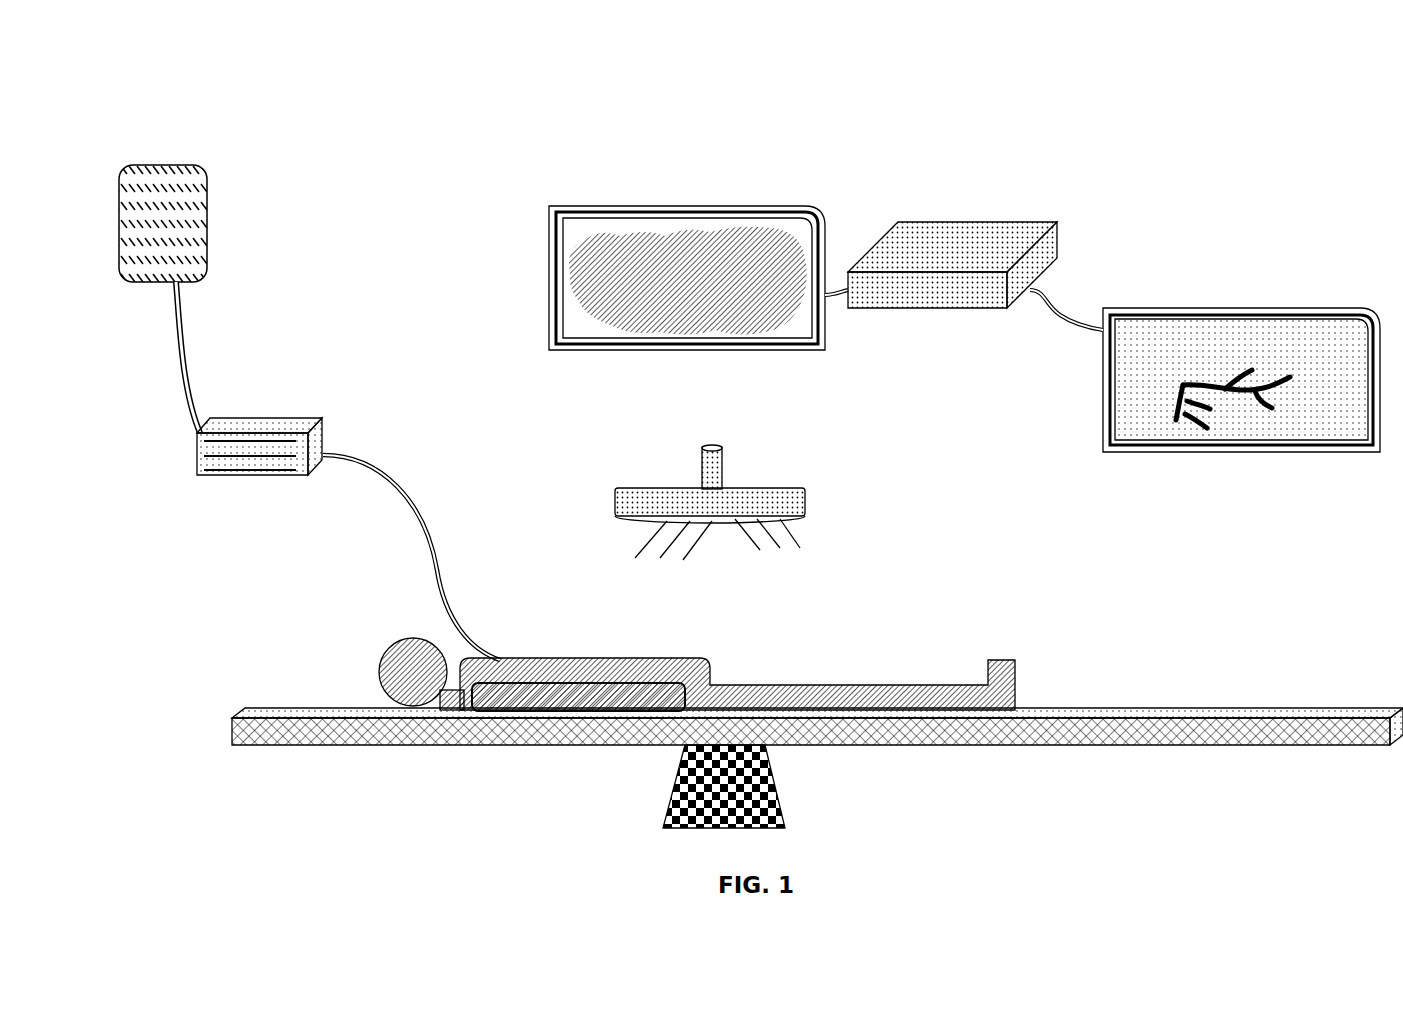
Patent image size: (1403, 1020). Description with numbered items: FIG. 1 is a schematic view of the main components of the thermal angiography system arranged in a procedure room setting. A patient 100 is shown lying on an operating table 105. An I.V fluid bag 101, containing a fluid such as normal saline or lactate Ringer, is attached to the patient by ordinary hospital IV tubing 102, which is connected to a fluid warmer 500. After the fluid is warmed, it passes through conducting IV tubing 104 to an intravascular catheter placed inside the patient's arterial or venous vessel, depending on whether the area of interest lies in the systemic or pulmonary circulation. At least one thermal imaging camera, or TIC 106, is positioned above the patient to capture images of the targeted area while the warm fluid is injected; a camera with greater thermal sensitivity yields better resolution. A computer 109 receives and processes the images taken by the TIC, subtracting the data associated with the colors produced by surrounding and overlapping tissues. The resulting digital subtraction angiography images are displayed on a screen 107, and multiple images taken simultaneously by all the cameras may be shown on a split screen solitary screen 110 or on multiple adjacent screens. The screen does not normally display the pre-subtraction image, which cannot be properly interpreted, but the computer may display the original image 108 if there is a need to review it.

The patient 100 is at (476, 686).
The I.V fluid bag 101 is at (172, 165).
The IV tubing 102 is at (180, 320).
The conducting IV tubing 104 is at (393, 488).
The operating table 105 is at (1257, 725).
The thermal imaging camera (TIC) 106 is at (615, 500).
The screen 107 is at (553, 208).
The original image 108 is at (667, 262).
The computer 109 is at (983, 220).
The split screen solitary screen 110 is at (1253, 382).
The fluid warmer 500 is at (233, 474).